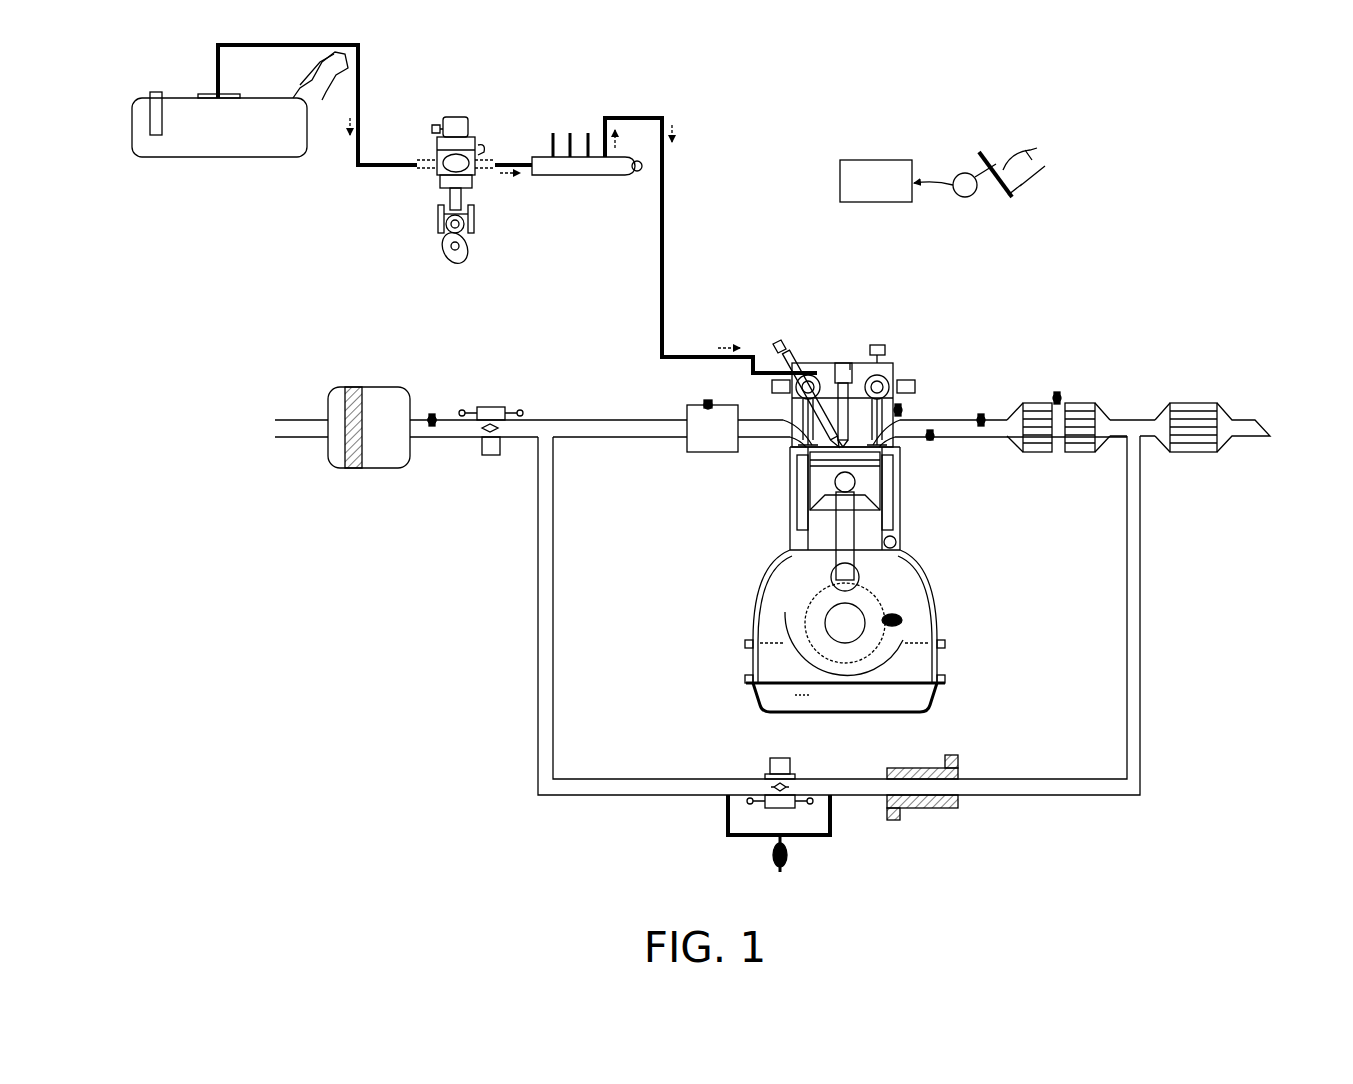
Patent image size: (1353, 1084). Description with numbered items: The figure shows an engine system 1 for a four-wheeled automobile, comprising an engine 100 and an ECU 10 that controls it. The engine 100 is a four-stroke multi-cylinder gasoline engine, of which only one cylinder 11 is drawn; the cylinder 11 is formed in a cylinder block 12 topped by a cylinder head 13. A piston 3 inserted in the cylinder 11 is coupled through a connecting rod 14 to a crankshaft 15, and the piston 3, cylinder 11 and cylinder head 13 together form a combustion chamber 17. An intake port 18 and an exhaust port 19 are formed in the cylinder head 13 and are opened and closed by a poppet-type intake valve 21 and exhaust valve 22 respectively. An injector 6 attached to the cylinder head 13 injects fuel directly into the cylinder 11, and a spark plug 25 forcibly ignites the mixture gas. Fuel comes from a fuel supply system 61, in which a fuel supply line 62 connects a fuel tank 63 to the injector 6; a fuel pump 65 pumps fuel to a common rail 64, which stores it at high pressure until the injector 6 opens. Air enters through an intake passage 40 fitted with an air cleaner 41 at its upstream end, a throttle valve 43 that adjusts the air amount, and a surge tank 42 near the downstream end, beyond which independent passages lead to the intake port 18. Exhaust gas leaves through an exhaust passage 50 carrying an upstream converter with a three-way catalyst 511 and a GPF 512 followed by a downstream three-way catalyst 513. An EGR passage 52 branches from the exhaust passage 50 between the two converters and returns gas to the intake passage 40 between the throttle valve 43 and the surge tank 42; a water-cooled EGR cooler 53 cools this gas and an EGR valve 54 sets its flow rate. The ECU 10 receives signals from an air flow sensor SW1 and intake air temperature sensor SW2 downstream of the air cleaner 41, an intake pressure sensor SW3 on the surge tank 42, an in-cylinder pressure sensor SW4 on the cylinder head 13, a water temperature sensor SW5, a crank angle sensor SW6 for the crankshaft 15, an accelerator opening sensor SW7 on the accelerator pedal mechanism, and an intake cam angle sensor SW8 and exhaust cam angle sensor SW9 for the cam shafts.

The engine system 1 is at (1122, 143).
The engine 100 is at (1003, 330).
The ECU 10 is at (876, 202).
The accelerator opening sensor SW7 is at (968, 197).
The fuel supply system 61 is at (362, 190).
The fuel supply line 62 is at (512, 163).
The fuel tank 63 is at (218, 162).
The common rail 64 is at (565, 176).
The fuel pump 65 is at (432, 180).
The intake passage 40 is at (577, 440).
The air cleaner 41 is at (376, 470).
The surge tank 42 is at (712, 428).
The throttle valve 43 is at (490, 455).
The air flow sensor SW1 is at (434, 414).
The intake air temperature sensor SW2 is at (432, 420).
The intake pressure sensor SW3 is at (690, 398).
The in-cylinder pressure sensor SW4 is at (851, 362).
The water temperature sensor SW5 is at (905, 410).
The crank angle sensor SW6 is at (902, 620).
The intake cam angle sensor SW8 is at (770, 385).
The exhaust cam angle sensor SW9 is at (888, 372).
The piston 3 is at (812, 502).
The injector 6 is at (840, 360).
The cylinder 11 is at (786, 553).
The cylinder block 12 is at (905, 548).
The cylinder head 13 is at (903, 455).
The connecting rod 14 is at (818, 575).
The crankshaft 15 is at (845, 636).
The combustion chamber 17 is at (893, 525).
The intake port 18 is at (792, 442).
The exhaust port 19 is at (903, 442).
The intake valve 21 is at (800, 485).
The exhaust valve 22 is at (885, 490).
The spark plug 25 is at (788, 355).
The exhaust passage 50 is at (1005, 440).
The three-way catalyst 511 is at (1035, 455).
The GPF 512 is at (1082, 455).
The three-way catalyst 513 is at (1188, 455).
The EGR passage 52 is at (1081, 777).
The EGR cooler 53 is at (914, 767).
The EGR valve 54 is at (777, 757).